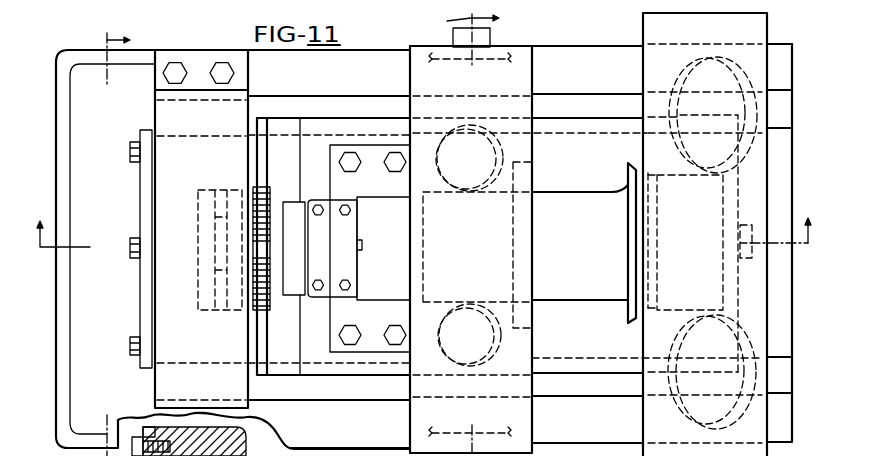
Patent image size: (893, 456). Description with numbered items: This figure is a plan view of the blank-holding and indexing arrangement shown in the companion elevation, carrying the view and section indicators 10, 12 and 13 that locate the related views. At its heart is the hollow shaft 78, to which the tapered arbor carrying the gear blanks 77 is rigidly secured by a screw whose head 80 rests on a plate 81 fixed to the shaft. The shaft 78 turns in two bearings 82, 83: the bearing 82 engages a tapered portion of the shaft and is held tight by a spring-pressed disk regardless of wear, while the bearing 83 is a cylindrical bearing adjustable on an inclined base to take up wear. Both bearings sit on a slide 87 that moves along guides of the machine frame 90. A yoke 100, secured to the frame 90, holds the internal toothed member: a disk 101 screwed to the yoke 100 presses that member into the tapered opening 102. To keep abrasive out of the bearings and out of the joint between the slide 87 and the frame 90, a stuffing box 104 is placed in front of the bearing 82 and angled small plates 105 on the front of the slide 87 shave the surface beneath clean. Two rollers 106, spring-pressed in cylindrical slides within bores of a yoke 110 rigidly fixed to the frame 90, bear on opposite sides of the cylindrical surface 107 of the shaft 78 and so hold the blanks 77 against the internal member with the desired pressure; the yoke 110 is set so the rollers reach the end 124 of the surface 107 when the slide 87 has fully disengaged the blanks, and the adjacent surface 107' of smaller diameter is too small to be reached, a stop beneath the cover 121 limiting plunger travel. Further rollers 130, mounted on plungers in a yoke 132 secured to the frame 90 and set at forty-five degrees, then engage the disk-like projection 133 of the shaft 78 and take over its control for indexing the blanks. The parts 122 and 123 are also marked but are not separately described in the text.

The section line 10- 10 is at (424, 252).
The section line 12- 12 is at (104, 240).
The section line 13- 13 is at (467, 232).
The gear blanks 77 is at (232, 198).
The hollow shaft 78 is at (568, 288).
The head of screw 80 is at (748, 228).
The plate 81 is at (733, 203).
The bearing 82 is at (340, 178).
The bearing 83 is at (705, 302).
The slide 87 is at (352, 363).
The machine frame 90 is at (67, 132).
The yoke 100 is at (173, 386).
The disk 101 is at (148, 196).
The tapered opening 102 is at (254, 448).
The stuffing box 104 is at (293, 285).
The small plates 105 is at (277, 132).
The rollers 106 is at (488, 152).
The cylindrical surface 107 is at (601, 176).
The surface of smaller diameter 107' is at (383, 233).
The yoke 110 is at (420, 63).
The cover 121 is at (453, 59).
The section plane end 122 is at (507, 59).
The cap block 123 is at (480, 32).
The end of cylindrical surface 124 is at (423, 193).
The rollers 130 is at (700, 82).
The yoke 132 is at (757, 27).
The disk-like projection 133 is at (632, 171).